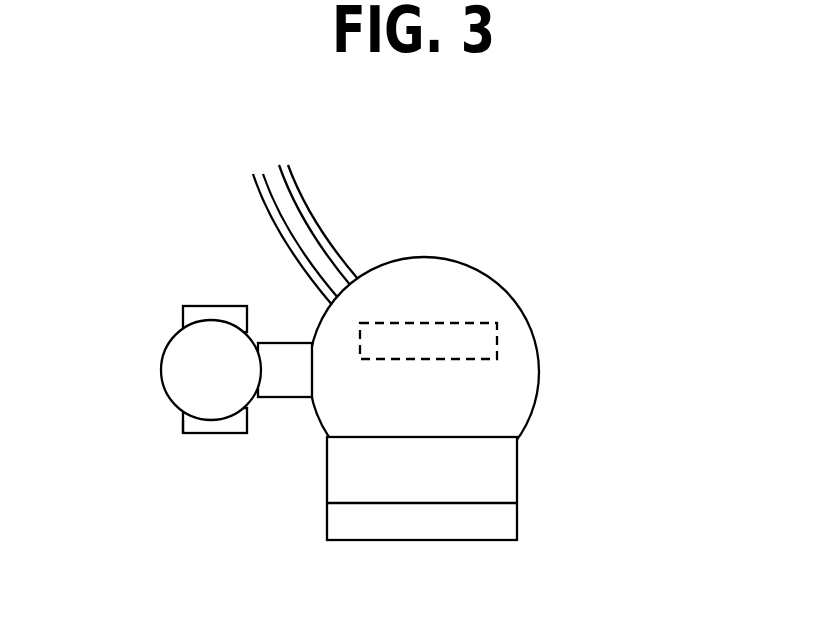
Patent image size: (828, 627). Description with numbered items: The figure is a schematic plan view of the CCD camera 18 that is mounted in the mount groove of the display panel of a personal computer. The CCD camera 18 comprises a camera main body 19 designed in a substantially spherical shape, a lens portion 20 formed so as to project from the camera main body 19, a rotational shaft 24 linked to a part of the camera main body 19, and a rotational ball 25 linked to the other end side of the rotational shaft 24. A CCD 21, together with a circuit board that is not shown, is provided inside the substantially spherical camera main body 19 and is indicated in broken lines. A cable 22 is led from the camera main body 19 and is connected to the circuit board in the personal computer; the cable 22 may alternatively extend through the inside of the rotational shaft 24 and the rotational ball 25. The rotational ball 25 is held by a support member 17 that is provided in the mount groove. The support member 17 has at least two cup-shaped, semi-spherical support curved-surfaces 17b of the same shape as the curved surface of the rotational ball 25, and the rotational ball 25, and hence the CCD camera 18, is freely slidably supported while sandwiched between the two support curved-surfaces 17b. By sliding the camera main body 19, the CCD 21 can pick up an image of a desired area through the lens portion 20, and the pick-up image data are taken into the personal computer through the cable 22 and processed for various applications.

The support member 17 is at (182, 435).
The support curved-surface 17b is at (216, 320).
The CCD camera 18 is at (501, 177).
The camera main body 19 is at (472, 282).
The lens portion 20 is at (506, 468).
The CCD 21 is at (474, 340).
The cable 22 is at (313, 230).
The rotational shaft 24 is at (283, 375).
The rotational ball 25 is at (175, 375).